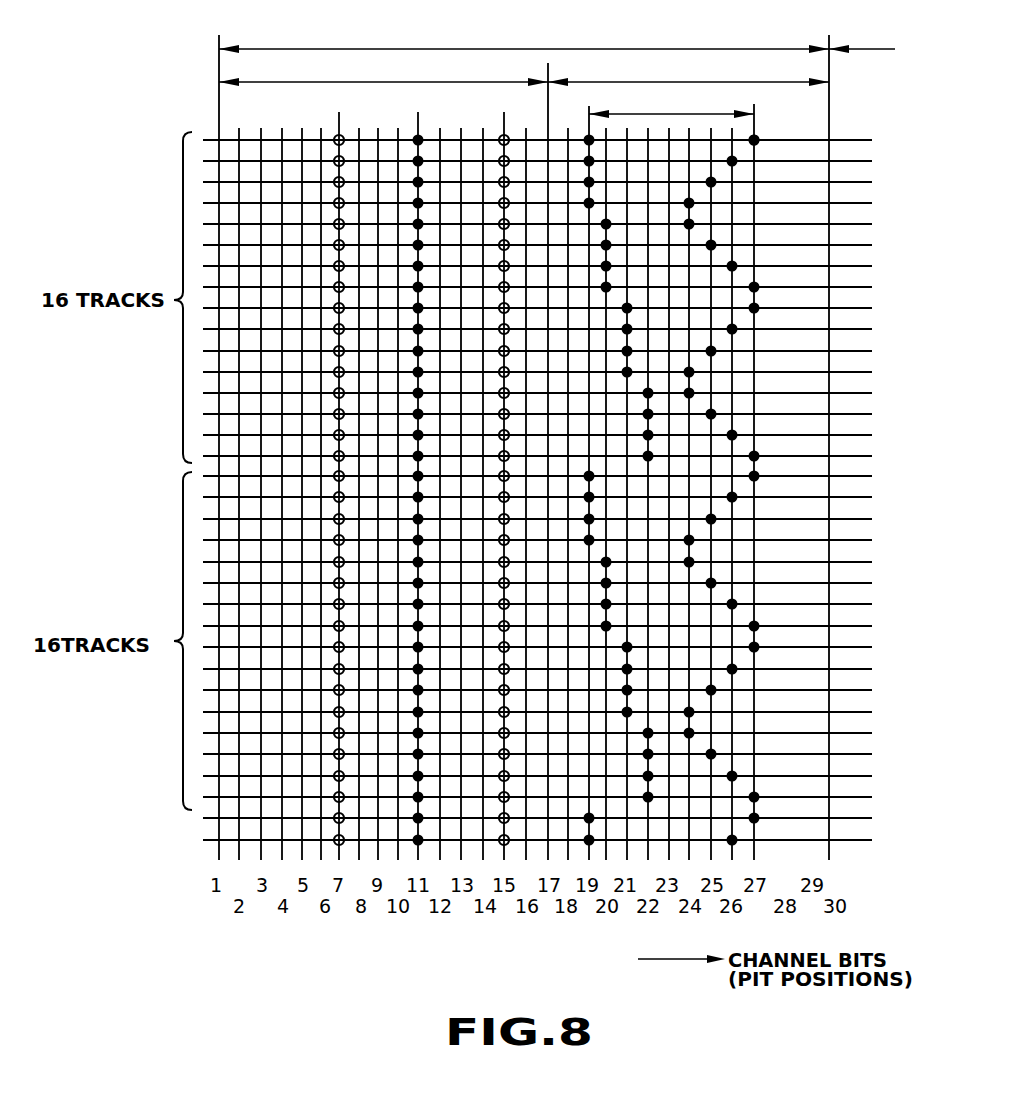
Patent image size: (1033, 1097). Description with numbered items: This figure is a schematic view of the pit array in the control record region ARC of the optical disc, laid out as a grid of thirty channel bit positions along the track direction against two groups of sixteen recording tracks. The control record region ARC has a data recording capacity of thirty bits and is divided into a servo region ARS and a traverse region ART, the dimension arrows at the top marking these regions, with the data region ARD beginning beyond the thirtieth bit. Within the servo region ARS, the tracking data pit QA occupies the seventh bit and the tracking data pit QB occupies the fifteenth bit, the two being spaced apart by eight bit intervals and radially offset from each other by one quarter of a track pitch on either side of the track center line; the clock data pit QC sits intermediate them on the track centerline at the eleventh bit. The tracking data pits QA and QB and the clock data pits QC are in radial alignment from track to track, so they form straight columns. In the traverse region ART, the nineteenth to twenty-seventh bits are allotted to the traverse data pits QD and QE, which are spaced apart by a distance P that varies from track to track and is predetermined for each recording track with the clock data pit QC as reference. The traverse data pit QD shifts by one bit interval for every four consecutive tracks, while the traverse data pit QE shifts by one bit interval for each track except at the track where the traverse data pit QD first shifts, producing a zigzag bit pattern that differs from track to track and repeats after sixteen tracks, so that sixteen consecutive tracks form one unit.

The control record region ARC is at (524, 37).
The servo region ARS is at (383, 70).
The traverse region ART is at (688, 71).
The data area ARD is at (863, 38).
The distance P is at (671, 103).
The tracking data pit QA is at (338, 136).
The clock data pit QC is at (417, 136).
The tracking data pit QB is at (503, 136).
The traverse data pit QD is at (588, 137).
The traverse data pit QE is at (782, 124).